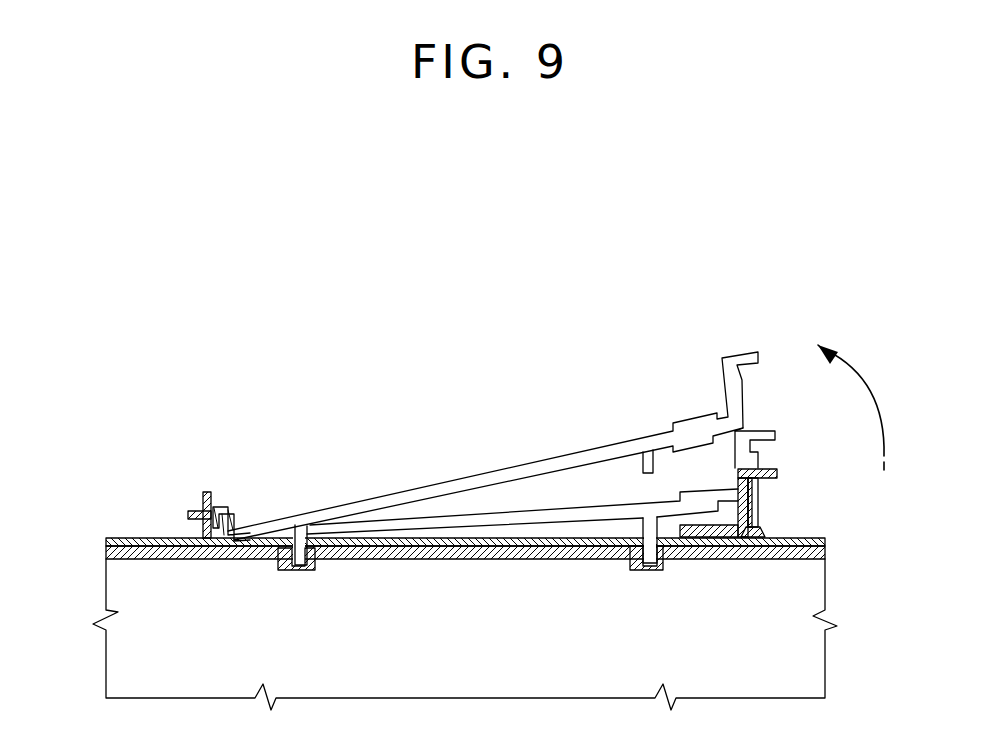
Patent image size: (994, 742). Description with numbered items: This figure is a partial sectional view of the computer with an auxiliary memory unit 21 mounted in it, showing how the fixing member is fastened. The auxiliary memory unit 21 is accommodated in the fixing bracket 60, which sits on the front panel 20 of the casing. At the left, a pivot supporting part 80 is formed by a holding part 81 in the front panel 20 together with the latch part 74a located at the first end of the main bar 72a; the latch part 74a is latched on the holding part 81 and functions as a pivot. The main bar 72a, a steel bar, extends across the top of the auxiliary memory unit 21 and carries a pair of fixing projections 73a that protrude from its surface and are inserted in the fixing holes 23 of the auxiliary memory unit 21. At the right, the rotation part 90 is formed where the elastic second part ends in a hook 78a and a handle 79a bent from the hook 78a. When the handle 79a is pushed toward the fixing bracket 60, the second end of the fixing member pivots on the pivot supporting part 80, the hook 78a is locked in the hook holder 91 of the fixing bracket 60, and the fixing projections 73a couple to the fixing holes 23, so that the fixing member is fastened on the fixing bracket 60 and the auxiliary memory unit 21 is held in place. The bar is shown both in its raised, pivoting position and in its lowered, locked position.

The front panel 20 is at (107, 538).
The auxiliary memory unit 21 is at (162, 560).
The fixing holes 23 is at (282, 566).
The fixing bracket 60 is at (825, 533).
The main bar 72a is at (385, 522).
The fixing projections 73a is at (297, 570).
The latch part 74a is at (187, 523).
The hook 78a is at (760, 496).
The handle 79a is at (752, 463).
The pivot supporting part 80 is at (154, 497).
The holding part 81 is at (200, 523).
The rotation part 90 is at (776, 475).
The hook holder 91 is at (758, 513).